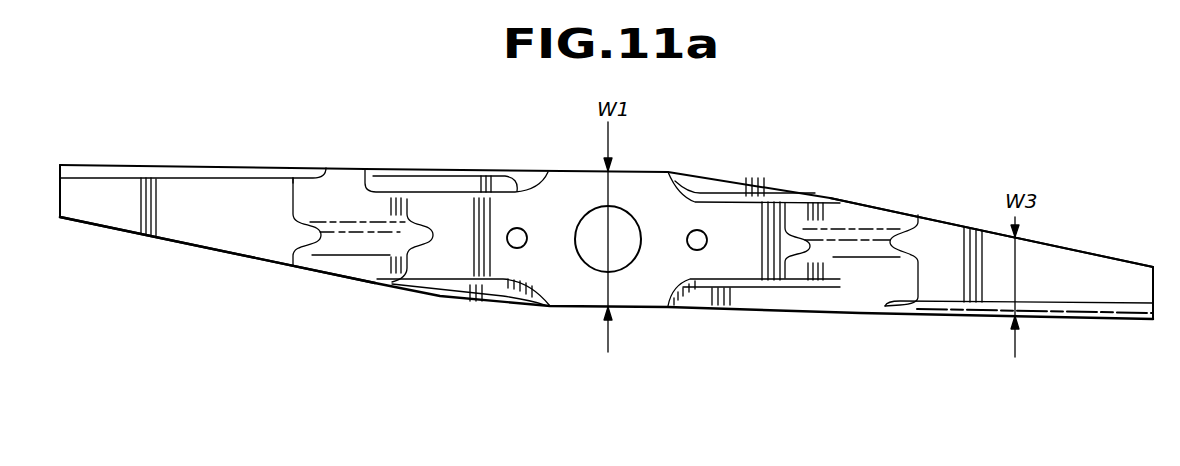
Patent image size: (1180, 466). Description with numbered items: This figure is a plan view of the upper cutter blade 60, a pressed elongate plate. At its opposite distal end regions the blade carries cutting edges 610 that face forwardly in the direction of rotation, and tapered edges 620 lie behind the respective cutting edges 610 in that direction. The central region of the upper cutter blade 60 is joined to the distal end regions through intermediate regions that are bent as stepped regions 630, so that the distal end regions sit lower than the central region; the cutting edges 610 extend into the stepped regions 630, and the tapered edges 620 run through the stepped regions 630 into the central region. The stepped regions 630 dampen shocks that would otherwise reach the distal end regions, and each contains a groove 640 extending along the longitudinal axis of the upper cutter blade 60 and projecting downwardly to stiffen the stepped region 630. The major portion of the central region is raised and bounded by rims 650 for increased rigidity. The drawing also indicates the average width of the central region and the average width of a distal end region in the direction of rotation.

The upper cutter blade 60 is at (792, 152).
The cutting edge 610 is at (108, 172).
The tapered edge 620 is at (122, 233).
The stepped region 630 is at (858, 212).
The groove 640 is at (337, 243).
The rim 650 is at (457, 197).